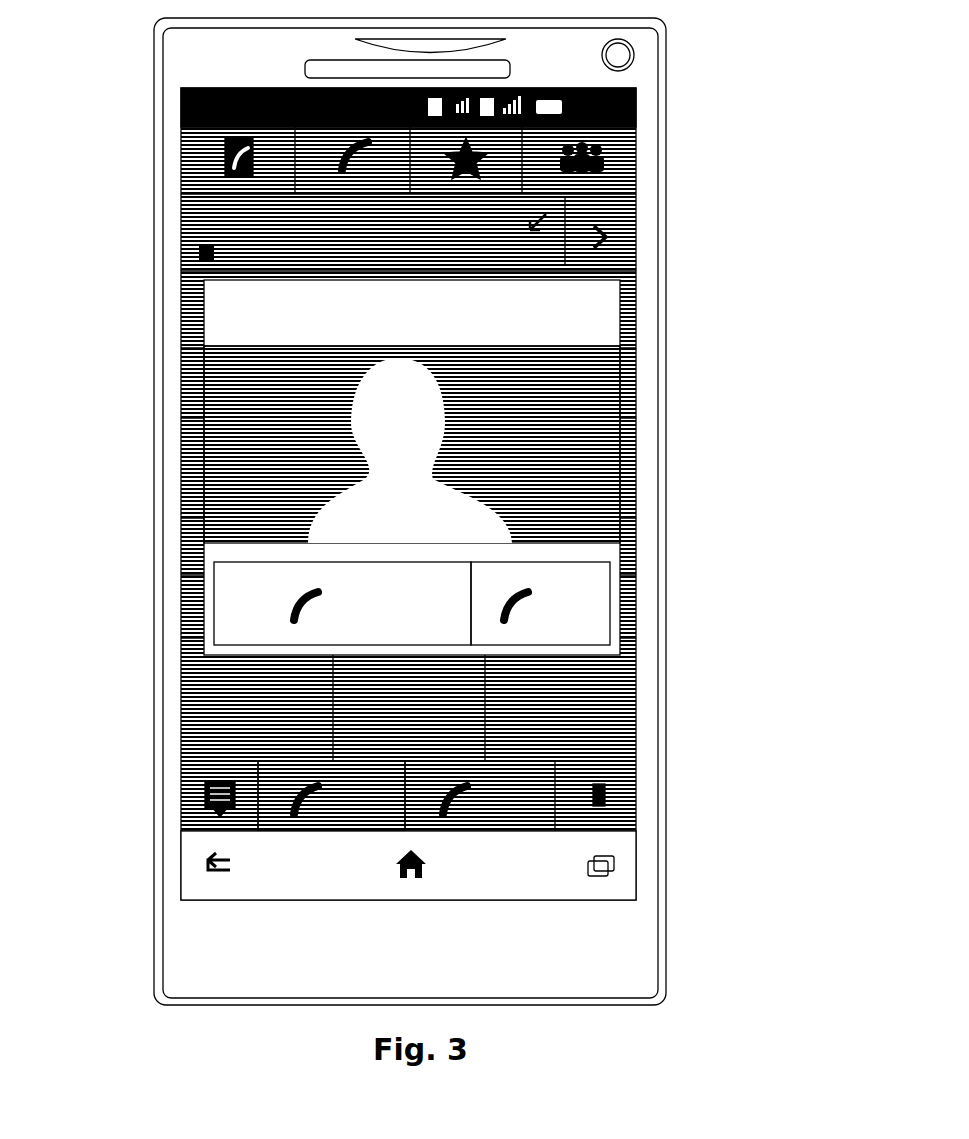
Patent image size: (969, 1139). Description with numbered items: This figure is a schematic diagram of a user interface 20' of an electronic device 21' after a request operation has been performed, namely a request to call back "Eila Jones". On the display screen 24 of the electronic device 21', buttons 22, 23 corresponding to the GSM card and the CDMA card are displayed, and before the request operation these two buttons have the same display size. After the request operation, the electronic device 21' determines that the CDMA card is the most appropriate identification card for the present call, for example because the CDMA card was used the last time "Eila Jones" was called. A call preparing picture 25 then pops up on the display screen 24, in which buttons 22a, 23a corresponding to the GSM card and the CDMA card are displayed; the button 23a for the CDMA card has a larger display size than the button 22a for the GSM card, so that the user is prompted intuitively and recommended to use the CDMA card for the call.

The user interface 20' is at (467, 511).
The electronic device 21' is at (475, 513).
The button corresponding to the GSM card 22 is at (424, 805).
The button corresponding to the GSM card 22a is at (580, 582).
The button corresponding to the CDMA card 23 is at (265, 772).
The button corresponding to the CDMA card 23a is at (225, 598).
The display screen 24 is at (420, 494).
The call preparing picture 25 is at (420, 475).